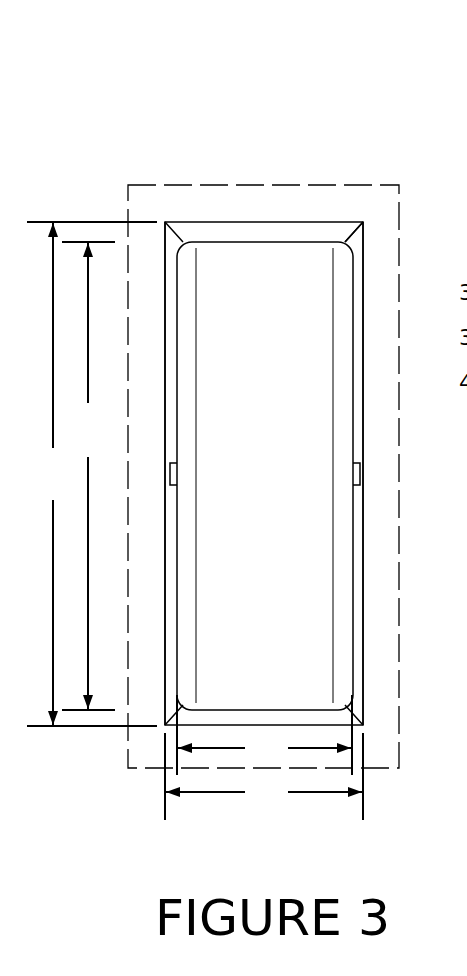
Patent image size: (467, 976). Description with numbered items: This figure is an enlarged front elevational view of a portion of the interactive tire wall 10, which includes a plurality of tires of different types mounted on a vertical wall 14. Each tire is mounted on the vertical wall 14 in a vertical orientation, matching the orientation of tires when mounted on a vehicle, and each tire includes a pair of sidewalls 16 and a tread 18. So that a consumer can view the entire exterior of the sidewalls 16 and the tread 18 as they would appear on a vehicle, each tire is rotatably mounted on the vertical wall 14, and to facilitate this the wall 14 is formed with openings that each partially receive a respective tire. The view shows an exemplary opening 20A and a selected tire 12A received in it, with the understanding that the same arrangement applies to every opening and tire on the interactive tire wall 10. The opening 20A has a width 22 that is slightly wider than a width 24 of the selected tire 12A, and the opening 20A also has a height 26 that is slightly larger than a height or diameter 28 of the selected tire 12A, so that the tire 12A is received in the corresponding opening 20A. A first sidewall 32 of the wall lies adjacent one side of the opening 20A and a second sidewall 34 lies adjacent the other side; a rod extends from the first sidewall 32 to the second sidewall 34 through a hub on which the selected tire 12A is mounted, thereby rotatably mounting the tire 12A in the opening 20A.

The interactive tire wall 10 is at (304, 160).
The selected tire 12A is at (229, 238).
The vertical wall 14 is at (349, 182).
The sidewall 16 is at (176, 362).
The tread 18 is at (318, 557).
The exemplary opening 20A is at (361, 247).
The width of the opening 22 is at (264, 776).
The width of the selected tire 24 is at (264, 735).
The height of the opening 26 is at (92, 474).
The height or diameter of the selected tire 28 is at (88, 476).
The first sidewall 32 is at (165, 600).
The second sidewall 34 is at (363, 432).